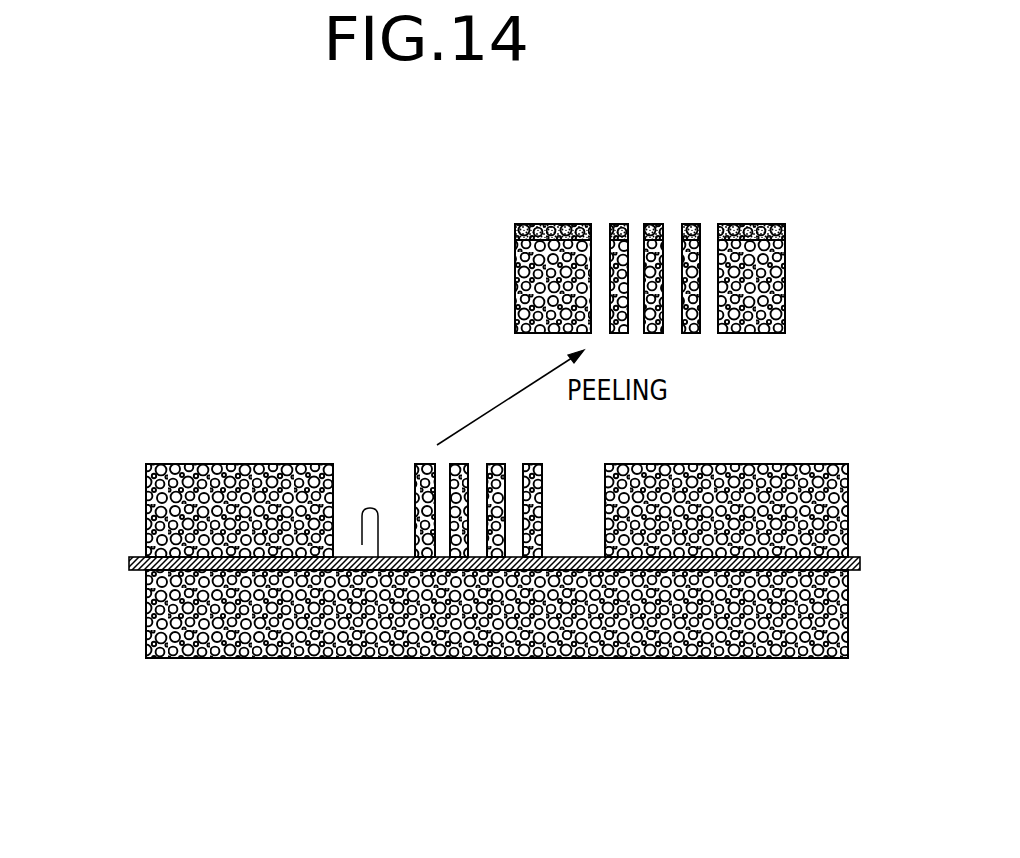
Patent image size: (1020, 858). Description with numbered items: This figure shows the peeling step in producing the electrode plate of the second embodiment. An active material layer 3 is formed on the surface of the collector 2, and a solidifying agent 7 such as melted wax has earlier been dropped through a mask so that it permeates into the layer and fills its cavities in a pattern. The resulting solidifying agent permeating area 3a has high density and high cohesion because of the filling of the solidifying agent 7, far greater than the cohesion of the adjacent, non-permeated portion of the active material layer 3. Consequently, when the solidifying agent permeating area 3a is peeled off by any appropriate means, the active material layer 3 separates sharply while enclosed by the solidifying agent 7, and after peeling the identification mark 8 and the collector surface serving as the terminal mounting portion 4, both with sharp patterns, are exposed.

The collector 2 is at (129, 557).
The active material layer 3 is at (196, 464).
The solidifying agent permeating area 3a is at (785, 287).
The terminal mounting portion 4 is at (378, 557).
The solidifying agent 7 is at (739, 224).
The identification mark 8 is at (537, 464).